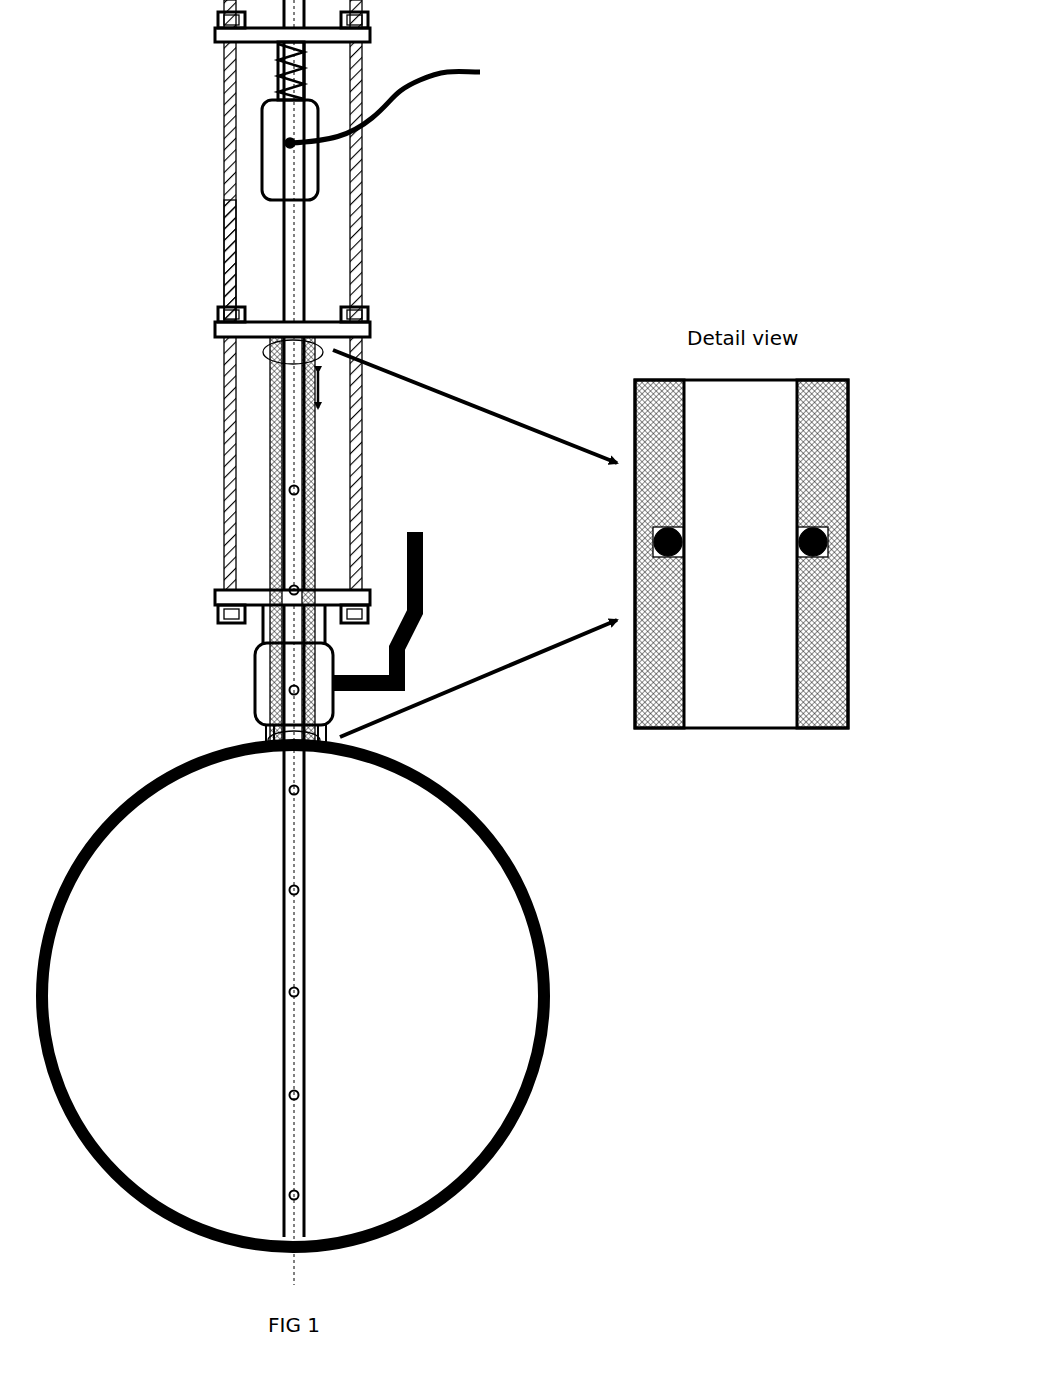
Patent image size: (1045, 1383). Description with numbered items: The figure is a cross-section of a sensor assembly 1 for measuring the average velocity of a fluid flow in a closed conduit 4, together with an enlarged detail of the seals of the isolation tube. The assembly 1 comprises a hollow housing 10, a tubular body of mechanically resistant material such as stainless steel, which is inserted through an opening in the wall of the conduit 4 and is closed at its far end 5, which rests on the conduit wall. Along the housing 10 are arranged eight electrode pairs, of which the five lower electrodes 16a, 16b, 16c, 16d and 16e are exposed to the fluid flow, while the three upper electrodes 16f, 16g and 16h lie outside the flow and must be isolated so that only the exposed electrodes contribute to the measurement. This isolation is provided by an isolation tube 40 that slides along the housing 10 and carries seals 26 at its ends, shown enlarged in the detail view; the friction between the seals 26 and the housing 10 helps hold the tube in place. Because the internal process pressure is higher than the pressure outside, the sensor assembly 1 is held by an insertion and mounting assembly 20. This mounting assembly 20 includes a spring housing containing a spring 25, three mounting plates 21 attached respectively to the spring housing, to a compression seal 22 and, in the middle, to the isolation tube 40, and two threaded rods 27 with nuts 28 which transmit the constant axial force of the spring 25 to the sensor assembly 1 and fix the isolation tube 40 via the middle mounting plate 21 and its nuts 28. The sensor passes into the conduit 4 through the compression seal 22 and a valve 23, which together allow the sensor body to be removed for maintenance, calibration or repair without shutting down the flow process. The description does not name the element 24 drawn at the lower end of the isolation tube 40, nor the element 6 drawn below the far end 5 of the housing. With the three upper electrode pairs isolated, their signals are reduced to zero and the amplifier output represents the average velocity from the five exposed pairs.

The sensor assembly 1 is at (314, 225).
The closed conduit 4 is at (520, 1122).
The far end 5 is at (288, 1250).
The vertical axis 6 is at (296, 1283).
The hollow housing 10 is at (306, 270).
The electrode 16a is at (308, 1190).
The electrode 16b is at (308, 1090).
The electrode 16c is at (308, 978).
The electrode 16d is at (308, 880).
The electrode 16e is at (308, 785).
The electrode 16f is at (270, 692).
The electrode 16g is at (270, 582).
The electrode 16h is at (270, 482).
The insertion and mounting assembly 20 is at (199, 218).
The mounting plate 21 is at (216, 34).
The compression seal 22 is at (262, 635).
The valve 23 is at (342, 742).
The lower seal 24 is at (266, 737).
The spring 25 is at (278, 70).
The seal 26 is at (340, 355).
The threaded rod 27 is at (224, 255).
The nut 28 is at (250, 14).
The isolation tube 40 is at (224, 378).